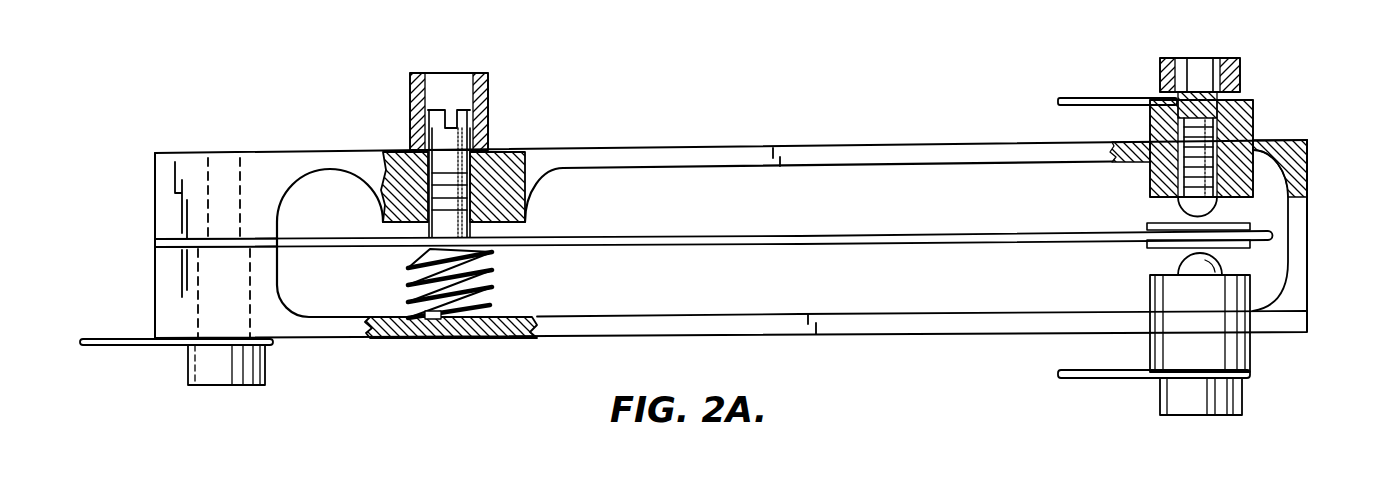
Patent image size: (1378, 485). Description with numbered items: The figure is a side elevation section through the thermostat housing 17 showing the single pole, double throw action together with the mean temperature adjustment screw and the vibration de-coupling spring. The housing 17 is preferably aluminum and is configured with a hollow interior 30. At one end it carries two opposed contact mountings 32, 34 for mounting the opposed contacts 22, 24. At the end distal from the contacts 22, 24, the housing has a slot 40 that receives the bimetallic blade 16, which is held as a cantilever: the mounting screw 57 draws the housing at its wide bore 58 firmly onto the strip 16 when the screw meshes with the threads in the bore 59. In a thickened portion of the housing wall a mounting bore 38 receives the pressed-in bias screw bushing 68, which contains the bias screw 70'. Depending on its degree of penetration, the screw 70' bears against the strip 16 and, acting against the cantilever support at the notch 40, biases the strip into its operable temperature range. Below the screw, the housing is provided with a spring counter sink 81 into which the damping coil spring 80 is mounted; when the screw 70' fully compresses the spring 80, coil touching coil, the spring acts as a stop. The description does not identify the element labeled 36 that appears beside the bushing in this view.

The bimetallic blade 16 is at (788, 235).
The housing 17 is at (818, 150).
The contact 22 is at (1227, 217).
The contact 24 is at (1222, 265).
The hollow interior 30 is at (932, 185).
The contact mounting 32 is at (1240, 153).
The contact mounting 34 is at (1250, 348).
The housing boss 36 is at (531, 177).
The mounting bore 38 is at (492, 152).
The slot 40 is at (168, 238).
The mounting screw 57 is at (265, 366).
The wide bore 58 is at (253, 312).
The bore 59 is at (217, 212).
The bias screw bushing 68 is at (420, 72).
The bias screw 70' is at (465, 134).
The damping coil spring 80 is at (510, 277).
The spring counter sink 81 is at (428, 320).